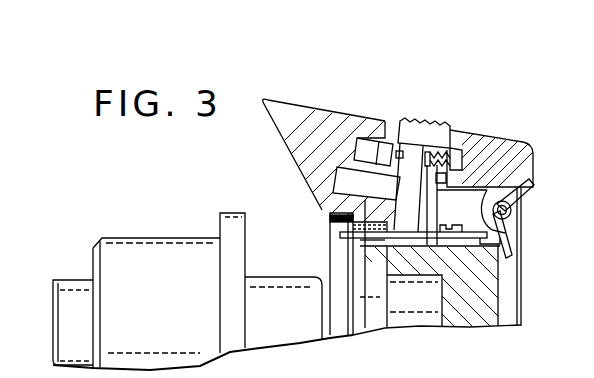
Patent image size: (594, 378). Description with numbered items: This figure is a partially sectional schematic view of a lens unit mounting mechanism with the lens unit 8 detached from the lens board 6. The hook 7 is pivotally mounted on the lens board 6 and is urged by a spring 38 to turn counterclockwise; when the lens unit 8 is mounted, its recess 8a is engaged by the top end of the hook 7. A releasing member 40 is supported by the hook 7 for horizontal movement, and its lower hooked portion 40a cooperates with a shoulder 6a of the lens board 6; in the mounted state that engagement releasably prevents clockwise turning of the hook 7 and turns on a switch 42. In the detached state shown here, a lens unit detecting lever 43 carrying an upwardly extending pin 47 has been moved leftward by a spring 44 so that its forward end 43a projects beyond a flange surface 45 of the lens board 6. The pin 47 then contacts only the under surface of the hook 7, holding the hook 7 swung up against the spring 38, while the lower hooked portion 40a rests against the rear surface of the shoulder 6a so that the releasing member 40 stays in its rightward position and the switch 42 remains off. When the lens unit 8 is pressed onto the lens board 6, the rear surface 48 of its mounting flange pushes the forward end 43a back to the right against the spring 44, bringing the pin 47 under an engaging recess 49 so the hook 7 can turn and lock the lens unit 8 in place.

The lens board 6 is at (476, 318).
The shoulder 6a is at (371, 264).
The hook 7 is at (336, 108).
The lens unit 8 is at (84, 242).
The recess 8a is at (184, 241).
The spring 38 is at (508, 243).
The releasing member 40 is at (427, 128).
The lower hooked portion 40a is at (441, 292).
The switch 42 is at (369, 147).
The lens unit detecting lever 43 is at (358, 246).
The forward end 43a is at (340, 233).
The spring 44 is at (498, 275).
The flange surface 45 is at (352, 308).
The pin 47 is at (438, 210).
The rear surface 48 is at (248, 228).
The engaging recess 49 is at (468, 172).